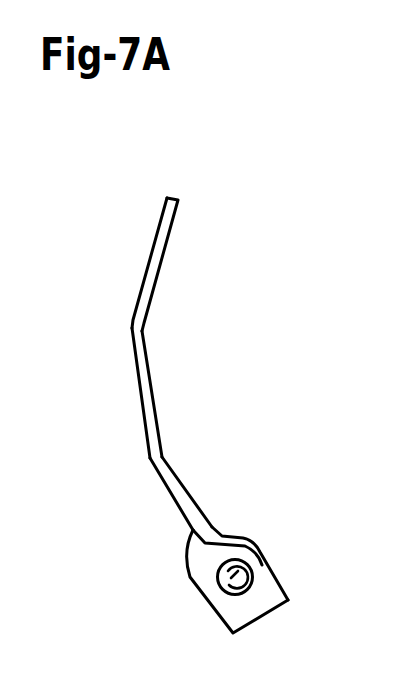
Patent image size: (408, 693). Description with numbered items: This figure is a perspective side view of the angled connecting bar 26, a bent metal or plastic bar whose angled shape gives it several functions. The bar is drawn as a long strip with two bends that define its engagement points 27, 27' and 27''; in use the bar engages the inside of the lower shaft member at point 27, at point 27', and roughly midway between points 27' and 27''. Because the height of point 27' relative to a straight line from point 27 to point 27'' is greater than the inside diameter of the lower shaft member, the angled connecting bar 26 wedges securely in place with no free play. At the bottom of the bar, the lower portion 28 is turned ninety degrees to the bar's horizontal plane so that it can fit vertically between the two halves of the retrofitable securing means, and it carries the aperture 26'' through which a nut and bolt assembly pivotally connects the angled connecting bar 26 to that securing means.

The angled connecting bar 26 is at (185, 434).
The engagement point 27 is at (124, 256).
The engagement point 27' is at (108, 384).
The engagement point 27'' is at (132, 490).
The lower turned portion 28 is at (232, 527).
The aperture 26'' is at (193, 623).